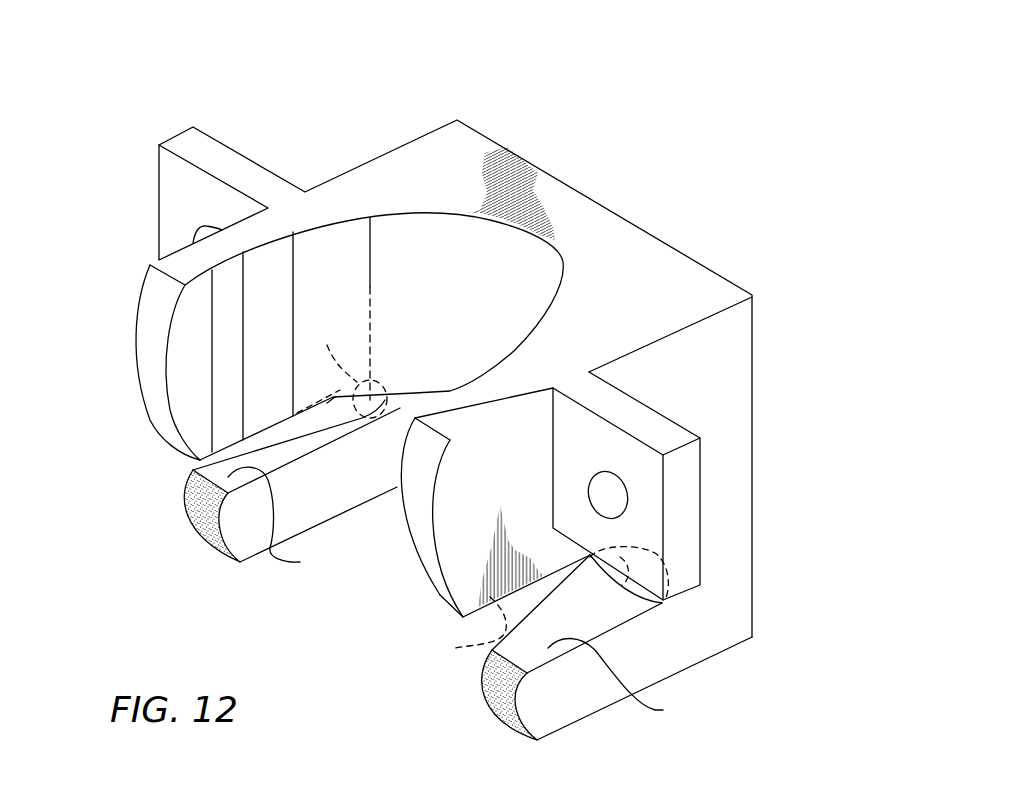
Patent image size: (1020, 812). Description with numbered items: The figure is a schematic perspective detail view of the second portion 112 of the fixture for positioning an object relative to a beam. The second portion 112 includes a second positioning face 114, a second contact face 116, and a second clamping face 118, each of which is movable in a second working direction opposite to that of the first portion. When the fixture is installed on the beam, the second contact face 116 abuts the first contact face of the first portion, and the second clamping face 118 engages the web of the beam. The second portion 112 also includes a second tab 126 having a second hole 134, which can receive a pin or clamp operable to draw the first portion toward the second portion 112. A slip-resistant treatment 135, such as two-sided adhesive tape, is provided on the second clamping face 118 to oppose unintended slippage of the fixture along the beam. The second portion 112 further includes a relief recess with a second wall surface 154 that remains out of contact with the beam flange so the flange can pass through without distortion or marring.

The second portion 112 is at (575, 92).
The second positioning face 114 is at (471, 316).
The second contact face 116 is at (114, 380).
The second clamping face 118 is at (145, 493).
The second tab 126 is at (246, 176).
The second hole 134 is at (191, 233).
The slip-resistant treatment 135 is at (205, 517).
The second wall surface 154 is at (465, 520).